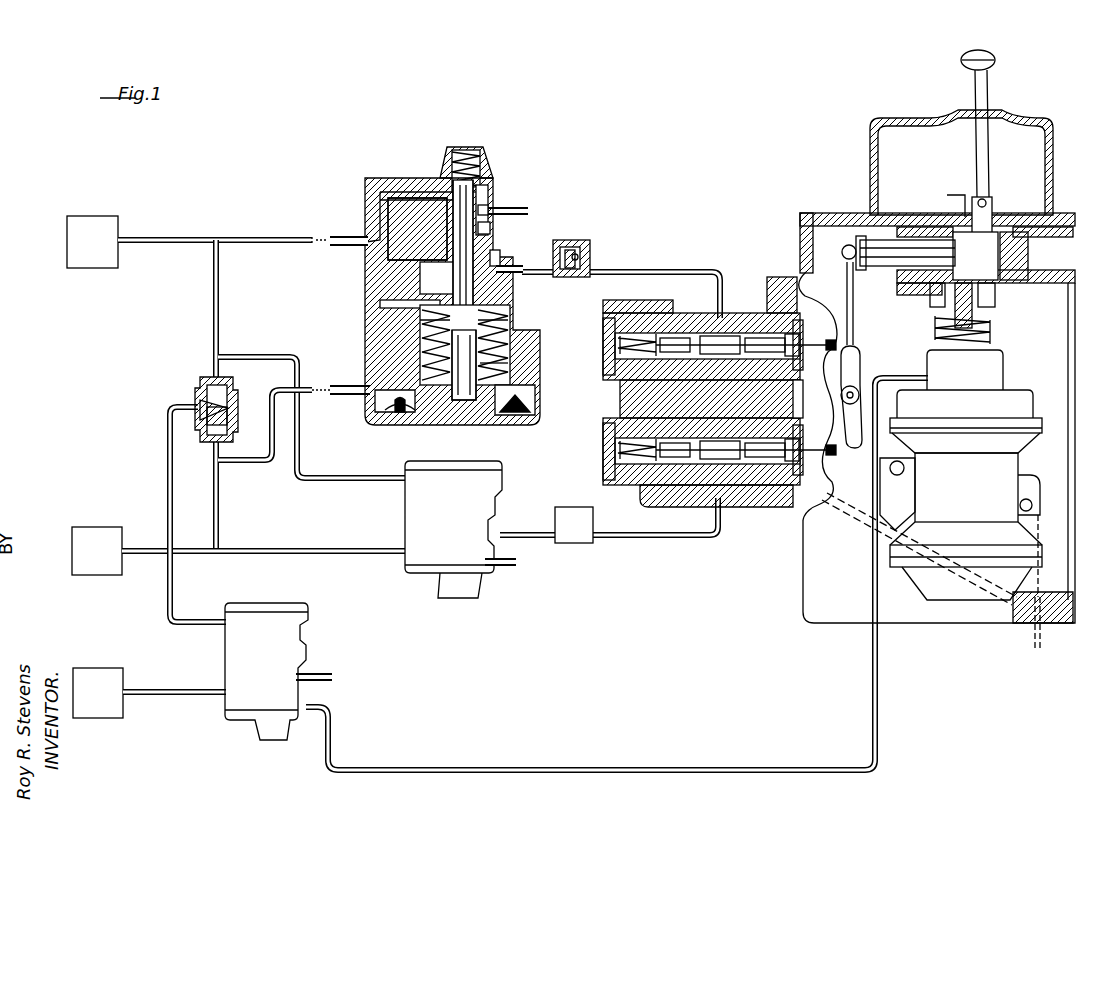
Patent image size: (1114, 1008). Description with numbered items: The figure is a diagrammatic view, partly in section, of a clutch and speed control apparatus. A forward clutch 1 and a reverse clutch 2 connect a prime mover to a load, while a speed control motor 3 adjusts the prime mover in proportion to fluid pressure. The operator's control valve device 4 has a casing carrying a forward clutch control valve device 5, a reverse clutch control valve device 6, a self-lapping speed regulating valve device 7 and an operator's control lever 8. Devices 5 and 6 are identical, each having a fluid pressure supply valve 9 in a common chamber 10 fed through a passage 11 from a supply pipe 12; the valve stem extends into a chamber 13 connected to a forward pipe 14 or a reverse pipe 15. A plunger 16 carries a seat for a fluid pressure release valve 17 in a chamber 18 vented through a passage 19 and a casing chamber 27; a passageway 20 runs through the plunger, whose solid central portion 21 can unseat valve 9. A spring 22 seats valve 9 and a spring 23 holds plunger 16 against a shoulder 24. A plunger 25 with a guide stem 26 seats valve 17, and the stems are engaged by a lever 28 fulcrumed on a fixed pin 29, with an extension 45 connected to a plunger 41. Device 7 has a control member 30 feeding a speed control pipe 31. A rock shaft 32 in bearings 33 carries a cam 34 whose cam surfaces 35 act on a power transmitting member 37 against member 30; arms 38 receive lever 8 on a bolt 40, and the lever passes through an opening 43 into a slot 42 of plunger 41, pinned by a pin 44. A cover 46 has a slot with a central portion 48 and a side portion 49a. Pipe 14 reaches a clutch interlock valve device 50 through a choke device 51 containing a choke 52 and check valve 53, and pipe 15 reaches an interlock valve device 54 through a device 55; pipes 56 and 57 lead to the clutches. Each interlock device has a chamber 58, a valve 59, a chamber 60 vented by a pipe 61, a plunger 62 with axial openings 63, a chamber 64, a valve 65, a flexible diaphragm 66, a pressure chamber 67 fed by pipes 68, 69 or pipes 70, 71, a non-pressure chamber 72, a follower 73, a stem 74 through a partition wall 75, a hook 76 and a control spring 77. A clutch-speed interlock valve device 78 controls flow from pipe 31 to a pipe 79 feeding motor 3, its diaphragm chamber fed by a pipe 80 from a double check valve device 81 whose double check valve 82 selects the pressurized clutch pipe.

The forward clutch 1 is at (97, 268).
The reverse clutch 2 is at (97, 575).
The speed control motor 3 is at (105, 718).
The operator's control valve device 4 is at (1062, 180).
The forward clutch control valve device 5 is at (605, 312).
The reverse clutch control valve device 6 is at (602, 485).
The self-lapping speed regulating valve device 7 is at (961, 475).
The operator's control lever 8 is at (963, 54).
The fluid pressure supply valve 9 is at (606, 440).
The common chamber 10 is at (650, 395).
The passage 11 is at (850, 530).
The supply pipe 12 is at (1030, 641).
The chamber 13 is at (680, 470).
The forward pipe 14 is at (650, 270).
The reverse pipe 15 is at (645, 538).
The plunger 16 is at (722, 470).
The fluid pressure release valve 17 is at (765, 470).
The chamber 18 is at (796, 305).
The passage 19 is at (798, 478).
The passageway 20 is at (730, 330).
The solid central portion 21 is at (706, 330).
The spring 22 is at (606, 455).
The spring 23 is at (700, 330).
The shoulder 24 is at (800, 392).
The plunger 25 is at (800, 420).
The guide stem 26 is at (836, 452).
The casing chamber 27 is at (805, 280).
The lever 28 is at (860, 370).
The fixed pin 29 is at (862, 392).
The control member or plunger 30 is at (990, 318).
The speed control pipe 31 is at (872, 741).
The rock shaft 32 is at (1050, 240).
The bearings 33 is at (1035, 226).
The cam 34 is at (930, 248).
The cam surfaces 35 is at (990, 296).
The power transmitting member 37 is at (930, 290).
The arms 38 is at (992, 235).
The bolt 40 is at (984, 200).
The plunger 41 is at (1000, 262).
The slot 42 is at (1030, 278).
The opening 43 is at (960, 195).
The pin 44 is at (988, 252).
The extension 45 is at (855, 290).
The cover 46 is at (1050, 135).
The central portion 48 is at (965, 113).
The slot portion 49a is at (950, 116).
The clutch interlock valve device 50 is at (362, 292).
The choke device 51 is at (560, 240).
The choke 52 is at (570, 278).
The check valve 53 is at (578, 255).
The clutch interlock valve device 54 is at (404, 522).
The choke device 55 is at (565, 545).
The pipe 56 is at (175, 238).
The pipe 57 is at (150, 549).
The chamber 58 is at (468, 155).
The valve 59 is at (488, 188).
The chamber 60 is at (494, 230).
The pipe 61 is at (315, 676).
The plunger 62 is at (502, 258).
The axial openings 63 is at (490, 208).
The chamber 64 is at (420, 272).
The valve 65 is at (370, 225).
The flexible diaphragm 66 is at (398, 428).
The pressure chamber 67 is at (420, 428).
The pipe 68 is at (338, 394).
The pipe 69 is at (220, 505).
The pipe 70 is at (350, 476).
The pipe 71 is at (220, 280).
The non-pressure chamber 72 is at (510, 337).
The follower 73 is at (492, 428).
The stem 74 is at (505, 365).
The partition wall 75 is at (380, 304).
The hook 76 is at (508, 282).
The control spring 77 is at (422, 330).
The clutch-speed interlock valve device 78 is at (440, 180).
The pipe 79 is at (191, 690).
The pipe 80 is at (173, 495).
The double check valve device 81 is at (198, 385).
The double check valve 82 is at (200, 435).